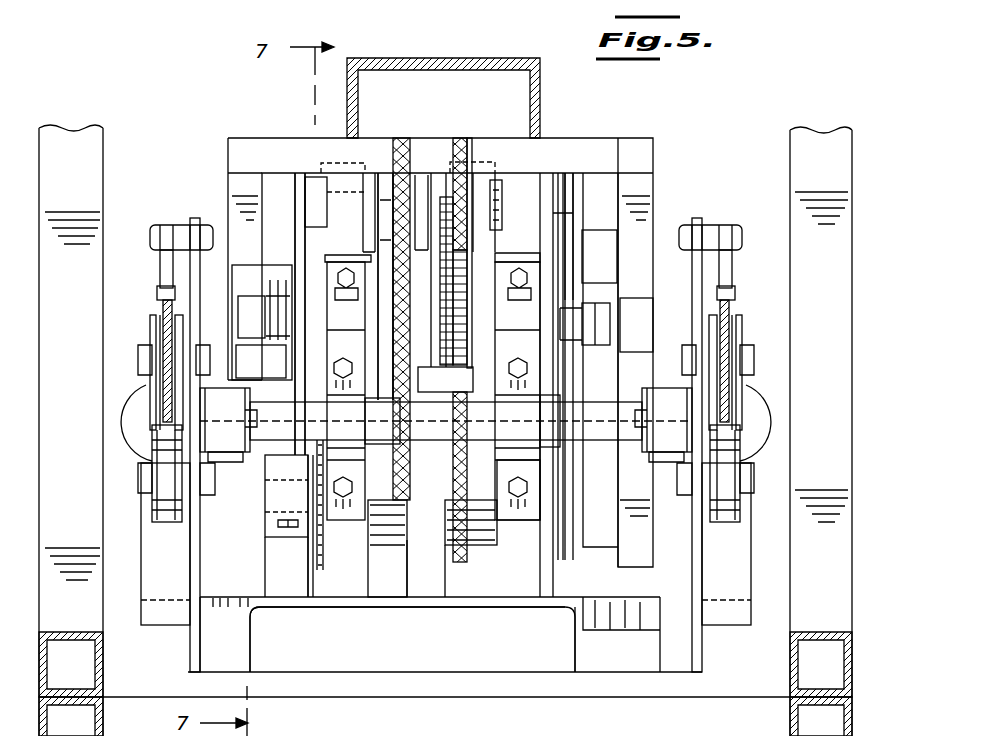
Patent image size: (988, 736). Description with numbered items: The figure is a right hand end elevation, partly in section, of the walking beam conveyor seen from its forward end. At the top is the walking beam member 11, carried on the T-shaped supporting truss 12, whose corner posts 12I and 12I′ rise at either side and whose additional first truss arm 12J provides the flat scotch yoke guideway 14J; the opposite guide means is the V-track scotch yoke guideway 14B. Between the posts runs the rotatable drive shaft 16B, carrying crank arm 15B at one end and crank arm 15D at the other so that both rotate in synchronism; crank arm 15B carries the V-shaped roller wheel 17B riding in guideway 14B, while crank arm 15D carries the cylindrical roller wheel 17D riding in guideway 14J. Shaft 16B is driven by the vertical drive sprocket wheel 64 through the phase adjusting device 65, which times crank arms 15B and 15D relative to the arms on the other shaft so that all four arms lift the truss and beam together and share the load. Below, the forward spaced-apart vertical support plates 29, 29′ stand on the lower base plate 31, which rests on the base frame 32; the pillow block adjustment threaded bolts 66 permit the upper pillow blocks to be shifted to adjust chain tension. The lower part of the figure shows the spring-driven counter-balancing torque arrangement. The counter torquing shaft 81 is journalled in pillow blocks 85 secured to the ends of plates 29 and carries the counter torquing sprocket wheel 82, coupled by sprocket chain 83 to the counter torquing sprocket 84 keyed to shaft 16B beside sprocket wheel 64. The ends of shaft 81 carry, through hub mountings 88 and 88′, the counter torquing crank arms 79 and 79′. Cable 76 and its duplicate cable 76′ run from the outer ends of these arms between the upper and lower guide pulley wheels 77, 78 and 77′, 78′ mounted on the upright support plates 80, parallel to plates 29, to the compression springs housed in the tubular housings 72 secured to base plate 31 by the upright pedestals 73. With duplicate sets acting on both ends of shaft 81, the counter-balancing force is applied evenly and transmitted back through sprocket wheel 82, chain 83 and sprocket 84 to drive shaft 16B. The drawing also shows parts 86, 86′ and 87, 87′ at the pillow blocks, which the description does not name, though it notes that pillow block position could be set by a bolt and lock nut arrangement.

The walking beam member 11 is at (487, 55).
The T-shaped supporting truss 12 is at (272, 130).
The vertical support post 12I is at (240, 150).
The vertical support post 12I′ is at (650, 158).
The additional first truss arm 12J is at (590, 352).
The scotch yoke guideway 14B is at (262, 304).
The scotch yoke guideway 14J is at (628, 298).
The crank arm 15B is at (296, 205).
The crank arm 15D is at (593, 236).
The rotatable drive shaft 16B is at (372, 195).
The roller wheel 17B is at (261, 361).
The roller wheel 17D is at (588, 297).
The forward vertical support plates 29 is at (345, 595).
The support plate 29′ is at (512, 595).
The lower base plate 31 is at (420, 600).
The base frame 32 is at (330, 676).
The sprocket wheel 64 is at (468, 145).
The phase adjusting device 65 is at (450, 145).
The pillow block adjustment threaded bolts 66 is at (278, 280).
The tubular protective housing 72 is at (125, 408).
The upright support pedestals 73 is at (155, 565).
The cable 76 is at (163, 312).
The cable 76′ is at (729, 312).
The upper guide pulley wheel 77 is at (150, 335).
The upper guide pulley wheel 77′ is at (742, 335).
The lower guide pulley wheel 78 is at (152, 512).
The lower guide pulley wheel 78′ is at (740, 510).
The counter torquing crank arm 79 is at (192, 226).
The counter torquing crank arm 79′ is at (694, 224).
The upright support plate 80 is at (190, 660).
The counter torquing shaft 81 is at (262, 440).
The counter torquing sprocket wheel 82 is at (404, 495).
The sprocket chain 83 is at (412, 335).
The counter torquing sprocket 84 is at (413, 140).
The pillow blocks 85 is at (322, 420).
The nut 86 is at (350, 270).
The nut 86′ is at (519, 270).
The nut block 87 is at (360, 312).
The nut block 87′ is at (482, 305).
The hub mounting 88 is at (236, 458).
The hub mounting 88′ is at (668, 388).